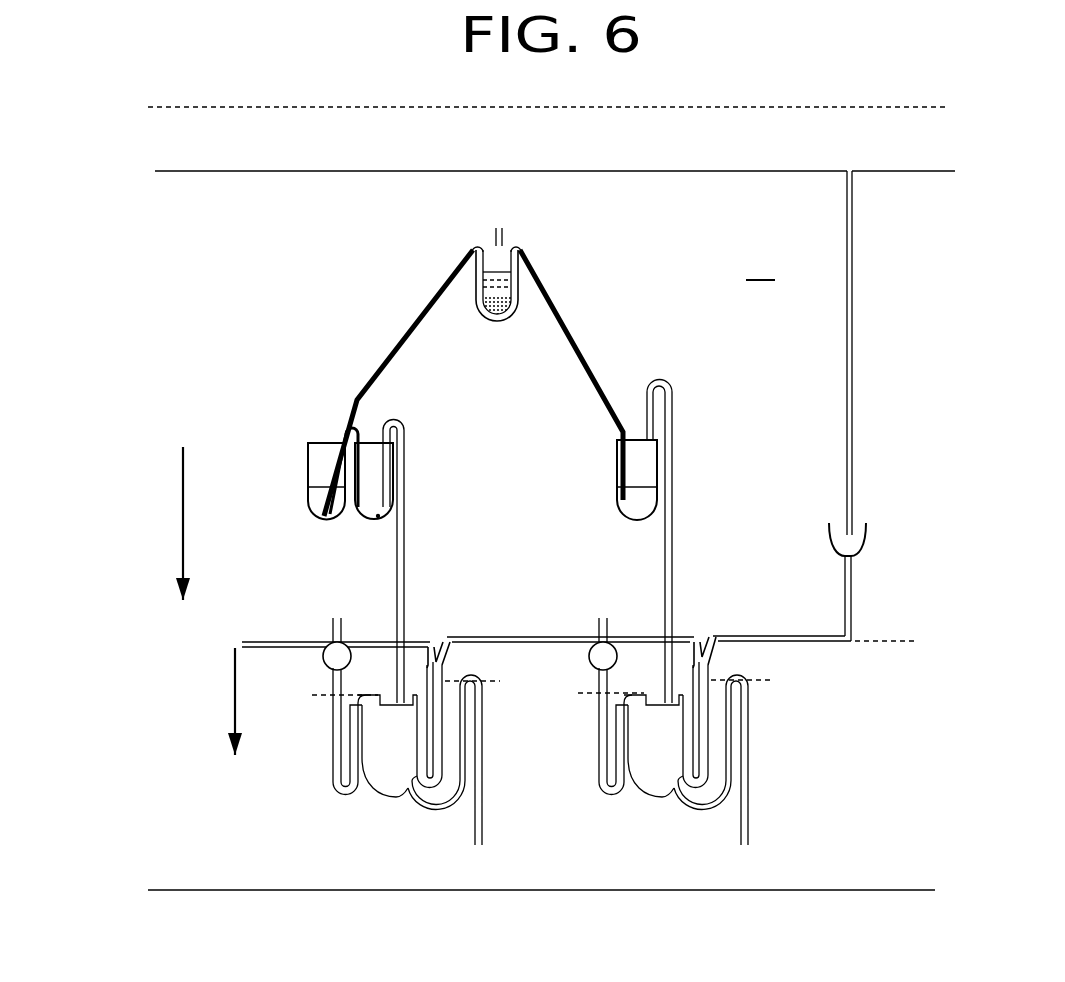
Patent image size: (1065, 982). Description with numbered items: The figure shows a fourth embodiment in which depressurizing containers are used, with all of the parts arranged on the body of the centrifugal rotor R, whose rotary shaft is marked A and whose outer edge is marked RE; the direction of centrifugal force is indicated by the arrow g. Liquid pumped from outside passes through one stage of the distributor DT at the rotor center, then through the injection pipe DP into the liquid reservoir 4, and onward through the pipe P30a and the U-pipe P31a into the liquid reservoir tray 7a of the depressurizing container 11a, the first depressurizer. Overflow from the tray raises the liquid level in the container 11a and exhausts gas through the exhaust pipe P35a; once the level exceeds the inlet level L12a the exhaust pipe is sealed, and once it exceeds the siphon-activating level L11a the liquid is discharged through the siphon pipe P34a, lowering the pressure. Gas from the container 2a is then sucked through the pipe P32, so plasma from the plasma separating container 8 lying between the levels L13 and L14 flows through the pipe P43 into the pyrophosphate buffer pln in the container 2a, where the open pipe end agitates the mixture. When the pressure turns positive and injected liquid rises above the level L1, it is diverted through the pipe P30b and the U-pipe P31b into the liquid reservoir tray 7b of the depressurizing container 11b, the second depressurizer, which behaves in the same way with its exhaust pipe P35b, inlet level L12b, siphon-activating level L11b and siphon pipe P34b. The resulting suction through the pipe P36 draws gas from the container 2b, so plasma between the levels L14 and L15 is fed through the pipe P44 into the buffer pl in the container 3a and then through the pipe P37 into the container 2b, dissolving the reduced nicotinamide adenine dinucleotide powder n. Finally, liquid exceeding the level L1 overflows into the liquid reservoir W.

The rotary shaft A is at (958, 107).
The distributor DT is at (960, 171).
The outer edge RE is at (946, 890).
The centrifugal rotor R is at (760, 267).
The injection pipe DP is at (856, 345).
The liquid reservoir 4 is at (868, 535).
The level L1 is at (880, 650).
The gravity direction g is at (183, 509).
The liquid reservoir W is at (235, 717).
The plasma separating container 8 is at (497, 326).
The level L13 is at (515, 262).
The level L14 is at (517, 282).
The level L15 is at (511, 302).
The pipe P44 is at (405, 338).
The pipe P43 is at (587, 342).
The pipe P37 is at (355, 428).
The container 3a is at (326, 526).
The pyrophosphate buffer pl is at (311, 500).
The container 2b is at (370, 526).
The reduced nicotinamide adenine dinucleotide powder n is at (380, 505).
The pipe P36 is at (406, 510).
The container 2a is at (636, 528).
The pyrophosphate buffer pln is at (641, 490).
The pipe P32 is at (674, 511).
The exhaust pipe P35b is at (346, 801).
The depressurizing container 11b is at (392, 801).
The liquid reservoir tray 7b is at (392, 694).
The U-pipe P31b is at (444, 745).
The pipe P30b is at (452, 662).
The siphon pipe P34b is at (489, 823).
The siphon-activating level L11b is at (492, 685).
The inlet level L12b is at (317, 701).
The exhaust pipe P35a is at (613, 742).
The depressurizing container 11a is at (659, 786).
The liquid reservoir tray 7a is at (645, 672).
The U-pipe P31a is at (748, 725).
The pipe P30a is at (763, 654).
The siphon pipe P34a is at (761, 760).
The siphon-activating level L11a is at (769, 700).
The inlet level L12a is at (590, 737).